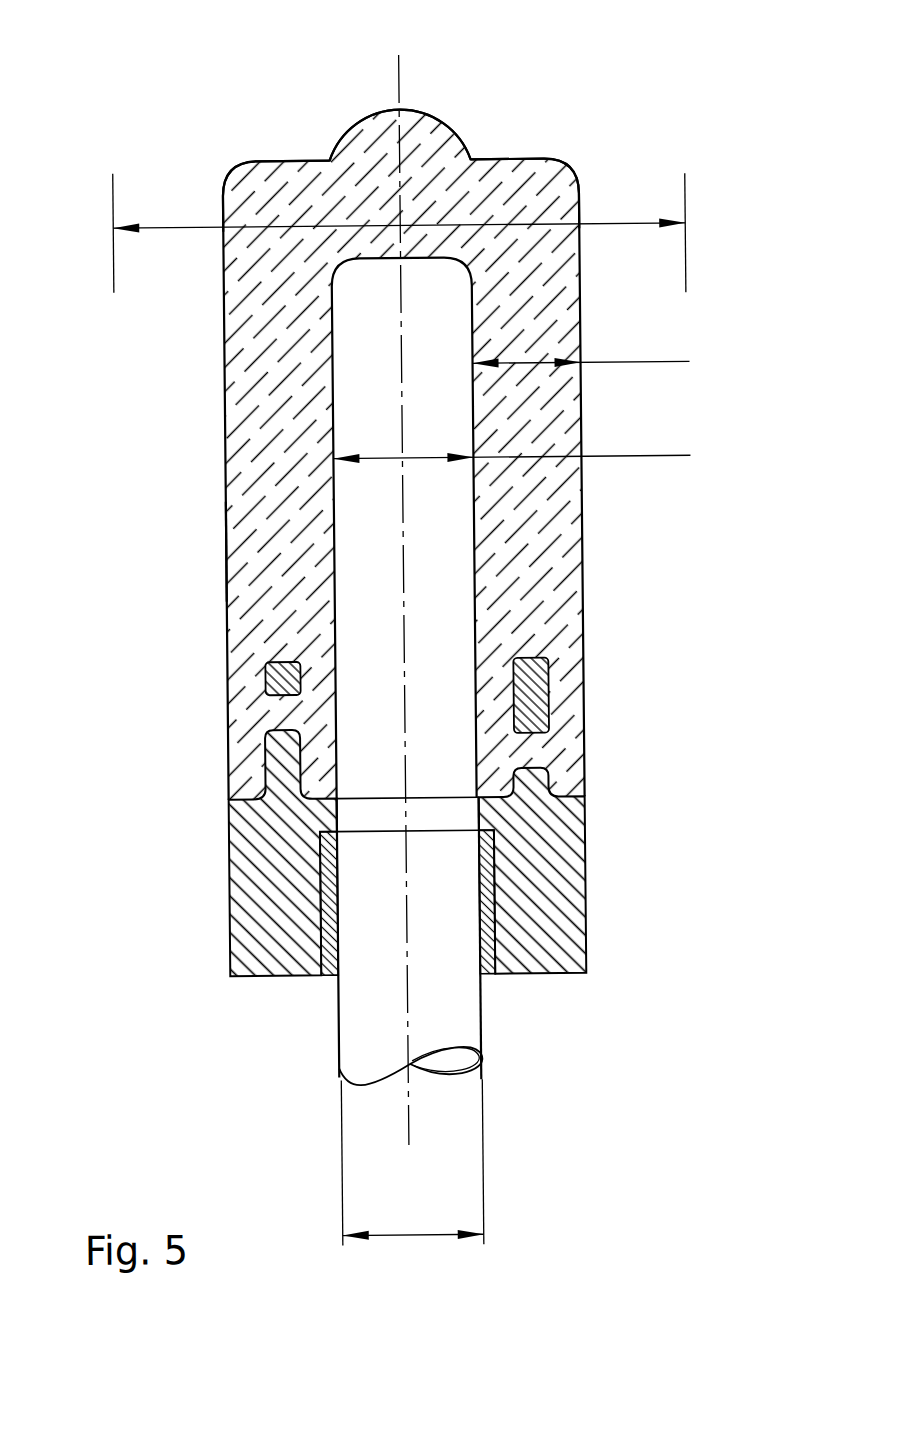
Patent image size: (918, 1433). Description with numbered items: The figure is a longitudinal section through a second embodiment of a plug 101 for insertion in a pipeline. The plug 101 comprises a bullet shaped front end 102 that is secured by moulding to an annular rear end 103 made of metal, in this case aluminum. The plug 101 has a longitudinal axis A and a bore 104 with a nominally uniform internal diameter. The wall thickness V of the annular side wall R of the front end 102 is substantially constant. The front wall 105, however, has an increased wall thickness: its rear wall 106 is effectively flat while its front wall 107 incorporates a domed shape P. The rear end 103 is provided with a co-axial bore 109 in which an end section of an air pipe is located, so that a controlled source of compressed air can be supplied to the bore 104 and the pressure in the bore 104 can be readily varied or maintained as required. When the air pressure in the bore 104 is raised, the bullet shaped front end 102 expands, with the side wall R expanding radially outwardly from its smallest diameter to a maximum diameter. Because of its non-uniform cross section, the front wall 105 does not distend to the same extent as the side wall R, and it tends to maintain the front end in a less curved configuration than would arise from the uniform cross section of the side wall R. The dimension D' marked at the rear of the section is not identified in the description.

The plug 101 is at (578, 628).
The bullet shaped front end 102 is at (577, 542).
The annular rear end 103 is at (547, 840).
The bore 104 is at (329, 713).
The front wall 105 is at (273, 199).
The rear wall 106 is at (265, 670).
The front wall 107 is at (496, 159).
The co-axial bore 109 is at (491, 927).
The domed shape P is at (371, 128).
The annular side wall R is at (254, 545).
The longitudinal axis A is at (400, 629).
The wall thickness V is at (597, 362).
The tube diameter D' is at (412, 1162).